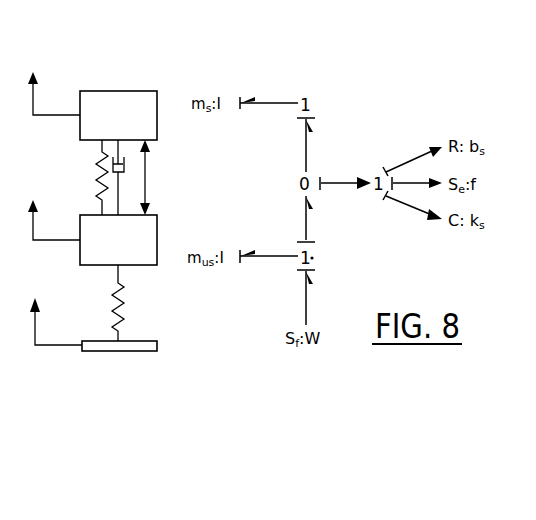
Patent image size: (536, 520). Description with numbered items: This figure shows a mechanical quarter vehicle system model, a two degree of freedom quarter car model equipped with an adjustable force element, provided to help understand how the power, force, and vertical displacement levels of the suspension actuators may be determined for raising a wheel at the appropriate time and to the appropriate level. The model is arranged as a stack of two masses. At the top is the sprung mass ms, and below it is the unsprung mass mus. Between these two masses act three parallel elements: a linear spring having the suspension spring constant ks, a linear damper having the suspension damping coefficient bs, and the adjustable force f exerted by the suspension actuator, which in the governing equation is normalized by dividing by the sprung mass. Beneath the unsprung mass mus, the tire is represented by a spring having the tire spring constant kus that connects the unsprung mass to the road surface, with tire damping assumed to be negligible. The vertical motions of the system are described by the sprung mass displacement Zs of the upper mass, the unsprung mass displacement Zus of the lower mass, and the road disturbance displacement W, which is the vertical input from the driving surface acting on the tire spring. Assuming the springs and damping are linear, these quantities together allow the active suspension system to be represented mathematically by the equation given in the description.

The sprung mass ms is at (118, 115).
The unsprung mass mus is at (118, 240).
The suspension spring constant ks is at (92, 177).
The suspension damping coefficient bs is at (126, 177).
The tire spring constant kus is at (101, 303).
The adjustable force f is at (150, 177).
The sprung mass displacement Zs is at (54, 93).
The unsprung mass displacement Zus is at (54, 220).
The road disturbance displacement W is at (56, 321).